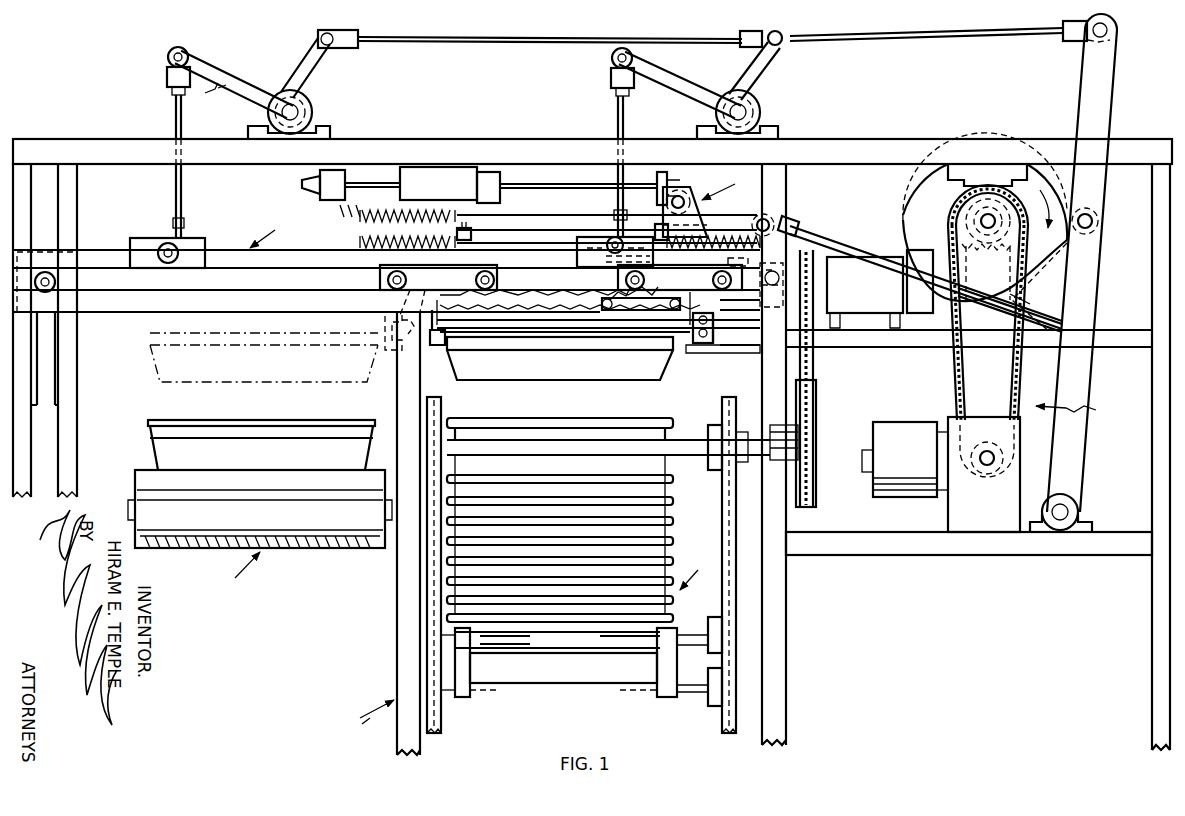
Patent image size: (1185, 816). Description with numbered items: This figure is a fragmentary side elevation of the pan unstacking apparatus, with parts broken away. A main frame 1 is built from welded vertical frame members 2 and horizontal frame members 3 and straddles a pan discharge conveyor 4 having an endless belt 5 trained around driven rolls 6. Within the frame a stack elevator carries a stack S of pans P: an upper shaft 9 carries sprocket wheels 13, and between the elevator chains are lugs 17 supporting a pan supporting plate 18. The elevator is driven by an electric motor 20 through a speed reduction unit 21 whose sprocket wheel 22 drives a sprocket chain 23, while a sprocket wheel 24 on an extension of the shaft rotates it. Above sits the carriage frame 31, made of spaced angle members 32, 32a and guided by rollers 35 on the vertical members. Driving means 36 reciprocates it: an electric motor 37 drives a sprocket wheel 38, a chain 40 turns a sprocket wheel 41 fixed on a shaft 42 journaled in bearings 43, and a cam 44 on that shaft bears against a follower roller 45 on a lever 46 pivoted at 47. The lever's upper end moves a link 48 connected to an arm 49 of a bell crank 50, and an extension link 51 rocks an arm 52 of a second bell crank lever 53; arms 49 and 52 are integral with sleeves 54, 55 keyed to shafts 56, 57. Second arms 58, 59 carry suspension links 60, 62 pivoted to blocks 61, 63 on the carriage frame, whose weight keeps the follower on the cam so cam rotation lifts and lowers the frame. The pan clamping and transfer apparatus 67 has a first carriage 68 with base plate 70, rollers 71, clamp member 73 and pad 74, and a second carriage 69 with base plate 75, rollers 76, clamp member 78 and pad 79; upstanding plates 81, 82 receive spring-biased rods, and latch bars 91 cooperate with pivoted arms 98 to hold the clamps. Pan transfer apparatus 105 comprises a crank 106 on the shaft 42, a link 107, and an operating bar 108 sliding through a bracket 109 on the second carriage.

The main frame 1 is at (369, 716).
The vertical frame members 2 is at (52, 468).
The horizontal frame members 3 is at (94, 140).
The pan discharge conveyor 4 is at (241, 574).
The endless belt 5 is at (146, 438).
The driven rolls 6 is at (136, 534).
The upper shaft 9 is at (570, 440).
The sprocket wheels 13 is at (439, 406).
The lugs 17 is at (470, 668).
The pan supporting plate 18 is at (580, 656).
The electric motor 20 is at (922, 304).
The speed reduction unit 21 is at (876, 247).
The sprocket wheel 22 is at (814, 242).
The sprocket chain 23 is at (818, 368).
The sprocket wheel 24 is at (816, 406).
The carriage frame 31 is at (274, 230).
The angle member 32 is at (282, 268).
The angle member 32a is at (282, 308).
The rollers 35 is at (58, 282).
The driving means 36 is at (1078, 410).
The electric motor 37 is at (906, 424).
The sprocket wheel 38 is at (984, 478).
The chain 40 is at (962, 394).
The sprocket wheel 41 is at (954, 208).
The shaft 42 is at (986, 214).
The bearings 43 is at (1043, 197).
The cam 44 is at (912, 191).
The follower roller 45 is at (1100, 226).
The lever 46 is at (1090, 273).
The pivot 47 is at (1072, 512).
The link 48 is at (918, 40).
The arm 49 is at (772, 78).
The bell crank 50 is at (712, 77).
The extension link 51 is at (548, 42).
The arm 52 is at (320, 80).
The second bell crank lever 53 is at (256, 77).
The sleeve 54 is at (766, 121).
The sleeve 55 is at (315, 120).
The shaft 56 is at (716, 117).
The shaft 57 is at (268, 116).
The second arm 58 is at (668, 78).
The arm 59 is at (196, 92).
The suspension link 60 is at (612, 108).
The block 61 is at (590, 256).
The suspension link 62 is at (181, 193).
The block 63 is at (190, 244).
The pan clamping and transfer apparatus 67 is at (728, 187).
The first carriage 68 is at (370, 282).
The second carriage 69 is at (718, 238).
The base plate 70 is at (474, 280).
The rollers 71 is at (406, 281).
The clamp member 73 is at (402, 352).
The resilient pad 74 is at (438, 346).
The base plate 75 is at (680, 277).
The rollers 76 is at (642, 282).
The clamp member 78 is at (714, 344).
The pad 79 is at (694, 342).
The plate 81 is at (464, 236).
The plate 82 is at (658, 228).
The latch bars 91 is at (568, 333).
The arms 98 is at (608, 303).
The pan transfer apparatus 105 is at (985, 318).
The crank 106 is at (1034, 302).
The link 107 is at (865, 292).
The operating bar 108 is at (554, 222).
The bracket 109 is at (678, 188).
The pans P is at (682, 512).
The stack S is at (693, 570).